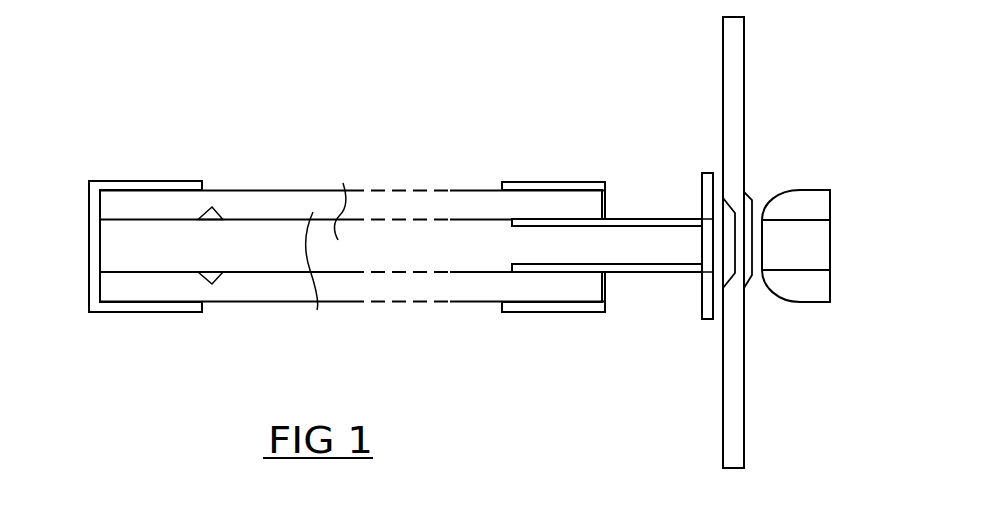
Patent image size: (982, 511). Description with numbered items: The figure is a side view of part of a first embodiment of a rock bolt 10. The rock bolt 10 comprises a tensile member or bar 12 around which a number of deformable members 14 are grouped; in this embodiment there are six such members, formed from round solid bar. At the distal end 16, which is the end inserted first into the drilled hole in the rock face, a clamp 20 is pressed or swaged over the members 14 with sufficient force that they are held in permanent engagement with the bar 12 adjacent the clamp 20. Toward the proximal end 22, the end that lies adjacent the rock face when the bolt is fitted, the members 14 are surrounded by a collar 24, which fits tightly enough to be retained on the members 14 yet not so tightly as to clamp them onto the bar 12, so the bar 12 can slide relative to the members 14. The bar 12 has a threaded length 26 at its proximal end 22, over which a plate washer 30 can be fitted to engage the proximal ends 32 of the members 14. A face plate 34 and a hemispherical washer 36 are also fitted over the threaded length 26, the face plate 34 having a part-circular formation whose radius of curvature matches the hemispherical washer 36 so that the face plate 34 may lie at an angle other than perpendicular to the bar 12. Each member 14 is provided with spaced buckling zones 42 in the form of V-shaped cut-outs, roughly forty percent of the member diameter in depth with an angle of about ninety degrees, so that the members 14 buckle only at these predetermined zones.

The rock bolt 10 is at (141, 98).
The tensile member or bar 12 is at (343, 183).
The deformable members 14 is at (342, 285).
The distal end 16 is at (101, 332).
The clamp 20 is at (116, 183).
The proximal end 22 is at (590, 322).
The collar 24 is at (532, 183).
The threaded length 26 is at (620, 221).
The plate washer 30 is at (703, 183).
The proximal ends of the members 32 is at (605, 298).
The face plate 34 is at (742, 148).
The hemispherical washer 36 is at (801, 292).
The buckling zones 42 is at (212, 210).